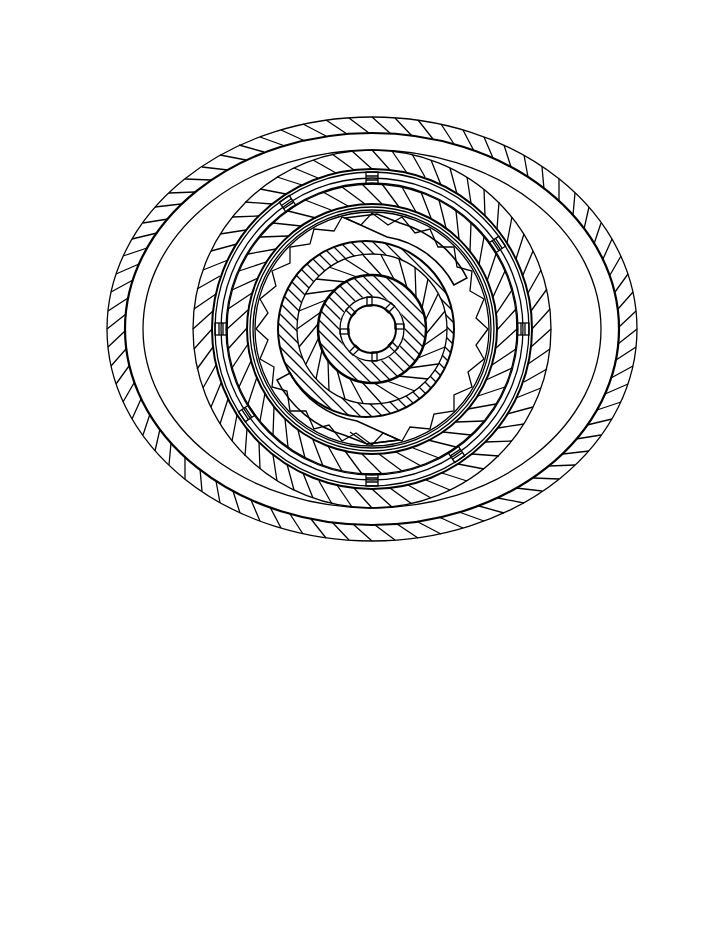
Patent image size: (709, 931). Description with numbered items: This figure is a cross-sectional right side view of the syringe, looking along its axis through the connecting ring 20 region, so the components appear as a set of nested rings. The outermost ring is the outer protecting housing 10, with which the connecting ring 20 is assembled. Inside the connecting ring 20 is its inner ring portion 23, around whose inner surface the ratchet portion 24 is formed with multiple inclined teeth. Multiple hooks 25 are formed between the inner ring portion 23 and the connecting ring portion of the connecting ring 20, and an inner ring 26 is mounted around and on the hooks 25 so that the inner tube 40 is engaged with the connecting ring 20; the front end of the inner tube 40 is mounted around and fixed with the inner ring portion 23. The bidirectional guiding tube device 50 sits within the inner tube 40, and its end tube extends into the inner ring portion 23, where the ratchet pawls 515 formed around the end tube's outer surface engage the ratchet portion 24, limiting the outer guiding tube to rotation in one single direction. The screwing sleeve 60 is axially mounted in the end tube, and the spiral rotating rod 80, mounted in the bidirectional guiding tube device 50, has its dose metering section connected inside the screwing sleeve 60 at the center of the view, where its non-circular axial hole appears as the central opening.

The outer protecting housing 10 is at (448, 113).
The connecting ring 20 is at (480, 150).
The inner ring portion 23 is at (470, 262).
The ratchet portion 24 is at (480, 323).
The hooks 25 is at (353, 180).
The inner ring 26 is at (377, 165).
The inner tube 40 is at (477, 223).
The bidirectional guiding tube device 50 is at (417, 393).
The screwing sleeve 60 is at (465, 363).
The spiral rotating rod 80 is at (423, 367).
The ratchet pawls 515 is at (387, 437).